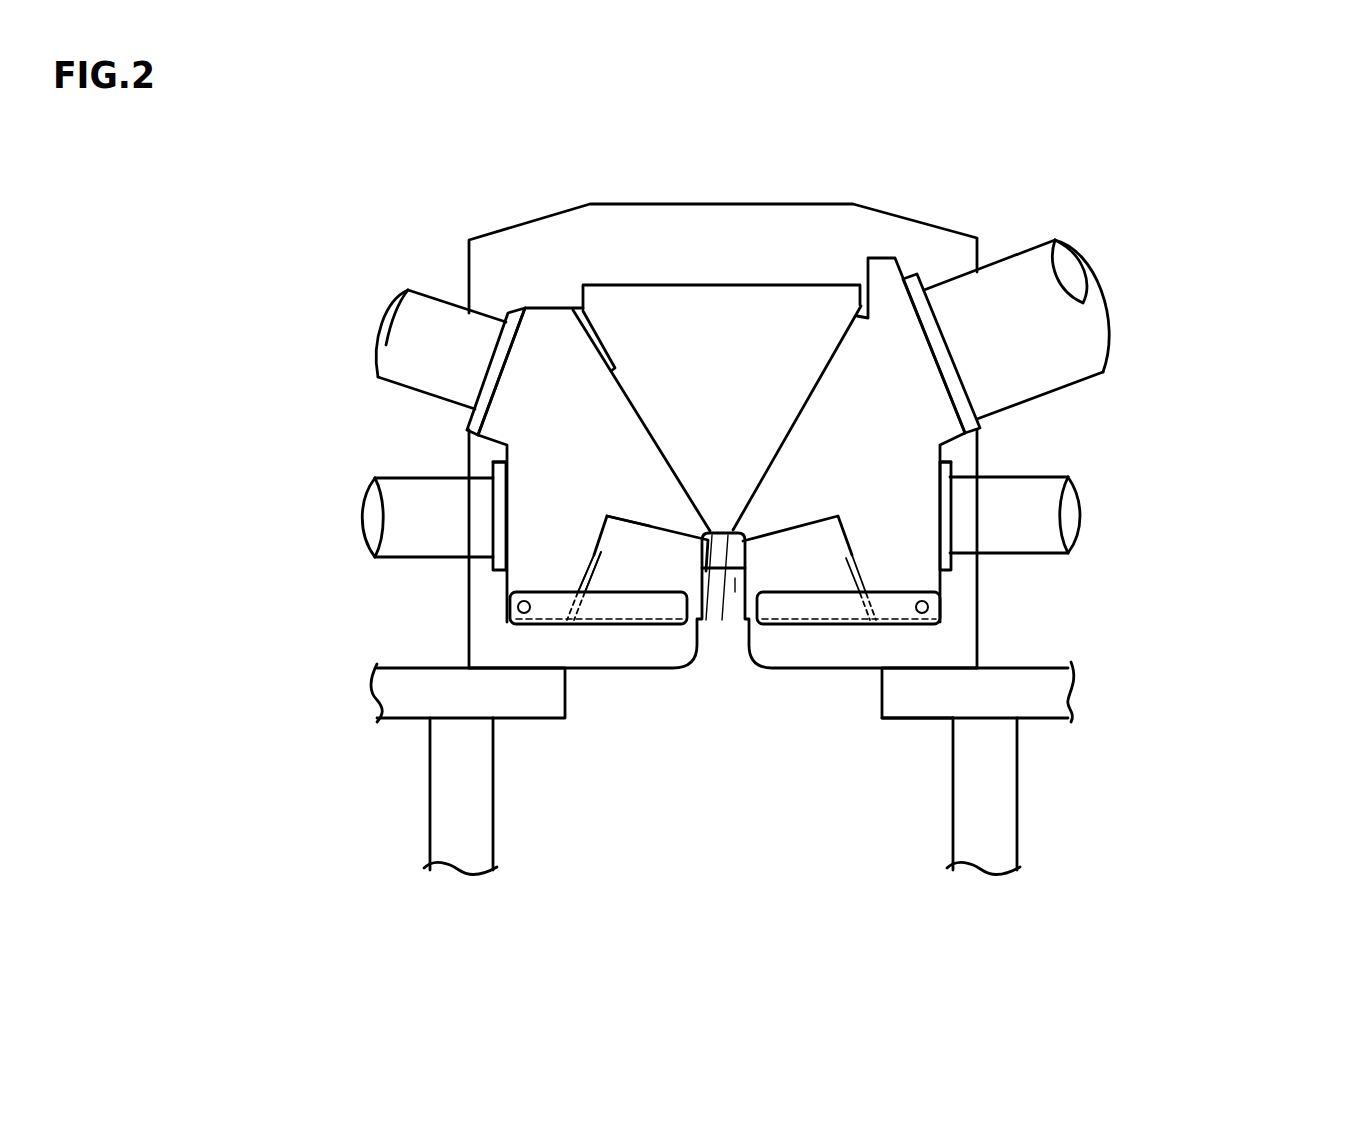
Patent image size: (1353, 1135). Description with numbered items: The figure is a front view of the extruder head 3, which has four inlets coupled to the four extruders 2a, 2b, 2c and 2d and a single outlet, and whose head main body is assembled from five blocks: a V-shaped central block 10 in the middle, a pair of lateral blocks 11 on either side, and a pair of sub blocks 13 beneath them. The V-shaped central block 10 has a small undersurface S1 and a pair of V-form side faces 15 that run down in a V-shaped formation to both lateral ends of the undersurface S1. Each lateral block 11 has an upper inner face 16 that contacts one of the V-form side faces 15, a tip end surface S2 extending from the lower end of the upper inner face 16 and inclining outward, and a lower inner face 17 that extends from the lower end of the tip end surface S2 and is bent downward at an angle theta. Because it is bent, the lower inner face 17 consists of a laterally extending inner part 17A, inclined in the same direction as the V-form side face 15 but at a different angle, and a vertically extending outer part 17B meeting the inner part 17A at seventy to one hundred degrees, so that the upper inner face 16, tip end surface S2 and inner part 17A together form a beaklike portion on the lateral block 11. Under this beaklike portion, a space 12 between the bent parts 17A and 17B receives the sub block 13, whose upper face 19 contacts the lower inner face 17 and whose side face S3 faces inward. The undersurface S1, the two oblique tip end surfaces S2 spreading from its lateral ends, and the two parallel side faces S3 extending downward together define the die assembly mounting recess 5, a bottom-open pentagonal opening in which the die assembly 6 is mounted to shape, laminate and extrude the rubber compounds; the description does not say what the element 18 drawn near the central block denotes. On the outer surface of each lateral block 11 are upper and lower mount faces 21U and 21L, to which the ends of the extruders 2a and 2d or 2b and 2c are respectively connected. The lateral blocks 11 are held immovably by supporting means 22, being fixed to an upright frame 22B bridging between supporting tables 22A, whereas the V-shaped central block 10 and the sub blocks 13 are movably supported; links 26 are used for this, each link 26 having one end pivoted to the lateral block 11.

The extruder head 3 is at (953, 214).
The extruder 2a is at (1040, 242).
The extruder 2b is at (425, 300).
The extruder 2c is at (420, 562).
The extruder 2d is at (1040, 476).
The die assembly mounting recess 5 is at (748, 572).
The die assembly 6 is at (810, 566).
The V-shaped central block 10 is at (706, 310).
The lateral block 11 is at (534, 345).
The space 12 is at (683, 565).
The sub block 13 is at (665, 577).
The V-form side face 15 is at (630, 395).
The upper inner face 16 is at (645, 412).
The lower inner face 17 is at (262, 772).
The laterally extending inner part 17A is at (650, 528).
The vertically extending outer part 17B is at (607, 560).
The inclined wall 18 is at (695, 520).
The upper face 19 is at (627, 517).
The upper mount face 21U is at (500, 360).
The lower mount face 21L is at (498, 508).
The supporting means 22 is at (1268, 682).
The supporting table 22A is at (1017, 808).
The upright frame 22B is at (977, 635).
The link 26 is at (515, 591).
The undersurface S1 is at (735, 578).
The tip end surface S2 is at (728, 535).
The side face S3 is at (712, 535).